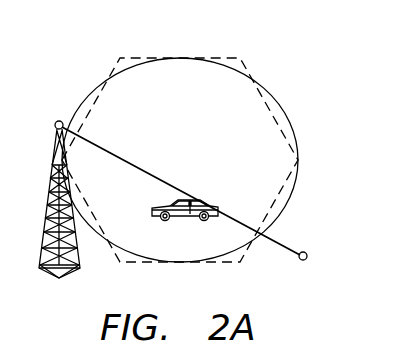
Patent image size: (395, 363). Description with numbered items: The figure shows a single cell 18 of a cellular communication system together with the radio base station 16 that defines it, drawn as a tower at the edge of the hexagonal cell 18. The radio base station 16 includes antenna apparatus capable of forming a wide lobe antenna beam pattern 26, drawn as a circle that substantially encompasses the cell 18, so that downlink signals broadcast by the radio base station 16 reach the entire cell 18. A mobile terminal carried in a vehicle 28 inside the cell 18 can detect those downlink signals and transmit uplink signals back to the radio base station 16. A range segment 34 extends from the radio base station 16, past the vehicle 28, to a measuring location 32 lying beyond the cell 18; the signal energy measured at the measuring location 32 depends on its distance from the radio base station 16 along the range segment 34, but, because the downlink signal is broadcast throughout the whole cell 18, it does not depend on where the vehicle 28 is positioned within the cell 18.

The radio base station 16 is at (58, 120).
The cell 18 is at (138, 58).
The wide lobe antenna beam pattern 26 is at (281, 108).
The vehicle 28 is at (183, 198).
The measuring location 32 is at (305, 262).
The range segment 34 is at (148, 172).